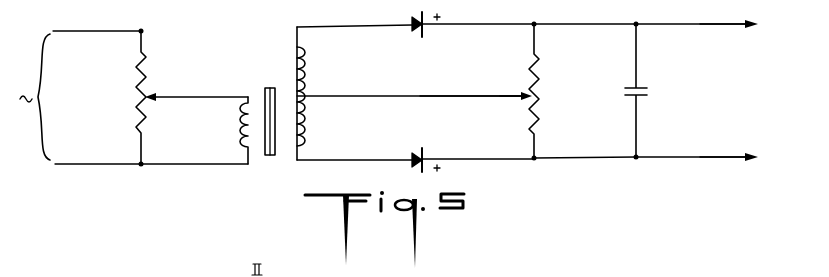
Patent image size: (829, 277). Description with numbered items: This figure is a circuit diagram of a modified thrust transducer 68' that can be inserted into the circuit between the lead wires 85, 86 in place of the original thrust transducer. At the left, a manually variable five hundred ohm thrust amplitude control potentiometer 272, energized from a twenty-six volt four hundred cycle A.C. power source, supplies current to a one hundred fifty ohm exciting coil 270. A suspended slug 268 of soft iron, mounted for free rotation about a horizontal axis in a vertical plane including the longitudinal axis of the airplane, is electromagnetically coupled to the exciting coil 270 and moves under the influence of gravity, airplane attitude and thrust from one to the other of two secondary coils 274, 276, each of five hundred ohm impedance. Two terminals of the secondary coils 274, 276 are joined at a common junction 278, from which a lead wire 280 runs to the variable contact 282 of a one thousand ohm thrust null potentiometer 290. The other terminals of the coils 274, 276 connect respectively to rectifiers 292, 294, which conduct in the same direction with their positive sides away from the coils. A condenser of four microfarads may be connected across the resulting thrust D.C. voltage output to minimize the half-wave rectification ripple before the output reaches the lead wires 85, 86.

The thrust transducer 68' is at (134, 122).
The thrust amplitude control potentiometer 272 is at (137, 77).
The exciting coil 270 is at (248, 96).
The slug 268 is at (269, 86).
The secondary coil 274 is at (296, 44).
The common junction 278 is at (306, 101).
The secondary coil 276 is at (306, 145).
The rectifier 292 is at (417, 39).
The rectifier 294 is at (419, 151).
The lead wire 280 is at (478, 98).
The thrust null potentiometer 290 is at (531, 66).
The variable contact 282 is at (530, 102).
The output terminal 85 is at (724, 24).
The lead wire 86 is at (721, 154).